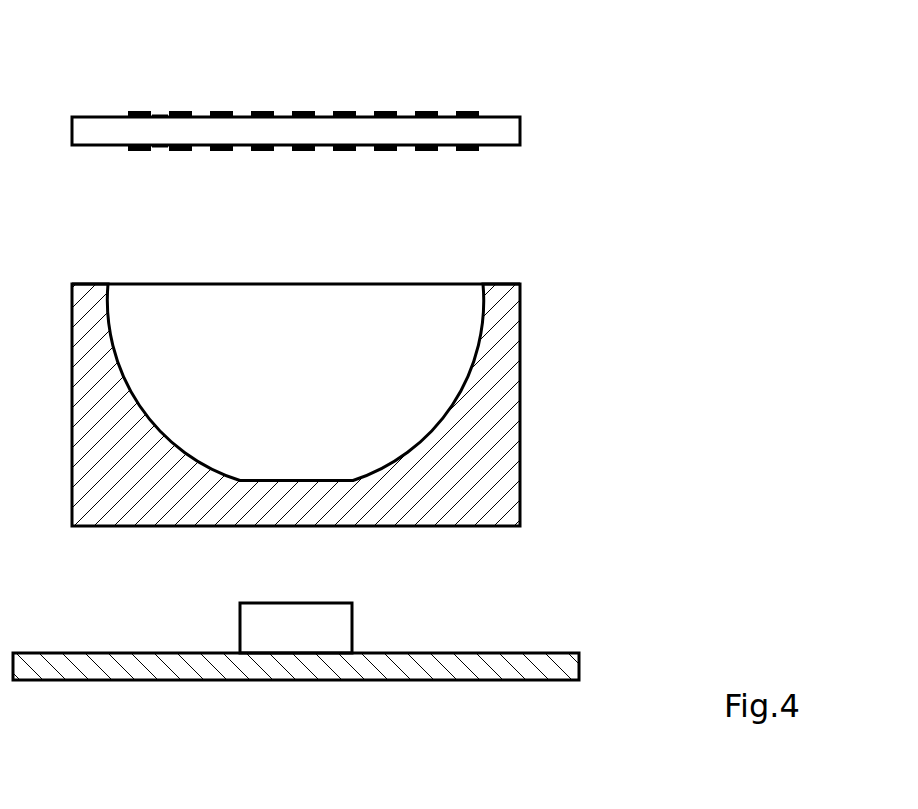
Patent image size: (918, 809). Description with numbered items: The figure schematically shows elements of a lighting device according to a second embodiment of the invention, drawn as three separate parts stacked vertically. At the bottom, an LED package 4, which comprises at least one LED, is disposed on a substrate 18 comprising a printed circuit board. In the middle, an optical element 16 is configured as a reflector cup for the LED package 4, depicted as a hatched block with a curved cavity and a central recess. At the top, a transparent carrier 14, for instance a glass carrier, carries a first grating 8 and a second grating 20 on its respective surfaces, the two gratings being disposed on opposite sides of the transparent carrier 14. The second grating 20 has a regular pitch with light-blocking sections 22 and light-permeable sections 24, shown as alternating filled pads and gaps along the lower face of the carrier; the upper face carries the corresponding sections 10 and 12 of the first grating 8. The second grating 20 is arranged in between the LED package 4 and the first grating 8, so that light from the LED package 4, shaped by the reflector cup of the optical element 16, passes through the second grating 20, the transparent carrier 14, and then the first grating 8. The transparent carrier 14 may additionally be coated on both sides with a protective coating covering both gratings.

The LED package 4 is at (332, 629).
The first grating 8 is at (268, 108).
The electrode 10 is at (177, 112).
The first layer 12 is at (158, 112).
The transparent carrier 14 is at (508, 132).
The optical element 16 is at (500, 407).
The substrate 18 is at (562, 667).
The second grating 20 is at (258, 155).
The light-blocking sections 22 is at (178, 152).
The light-permeable sections 24 is at (160, 152).